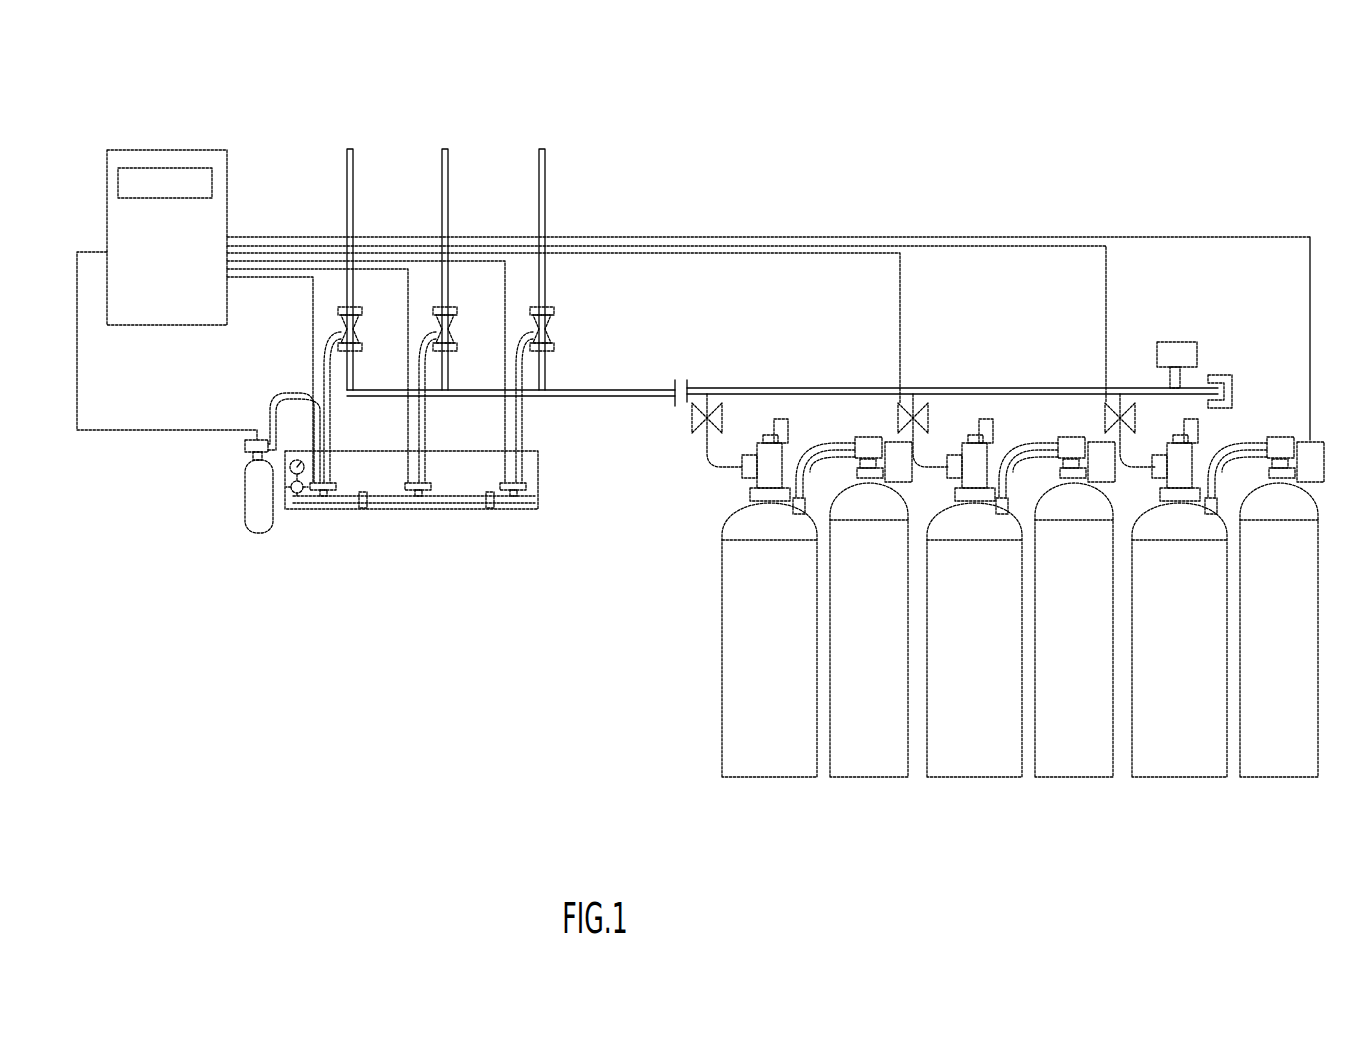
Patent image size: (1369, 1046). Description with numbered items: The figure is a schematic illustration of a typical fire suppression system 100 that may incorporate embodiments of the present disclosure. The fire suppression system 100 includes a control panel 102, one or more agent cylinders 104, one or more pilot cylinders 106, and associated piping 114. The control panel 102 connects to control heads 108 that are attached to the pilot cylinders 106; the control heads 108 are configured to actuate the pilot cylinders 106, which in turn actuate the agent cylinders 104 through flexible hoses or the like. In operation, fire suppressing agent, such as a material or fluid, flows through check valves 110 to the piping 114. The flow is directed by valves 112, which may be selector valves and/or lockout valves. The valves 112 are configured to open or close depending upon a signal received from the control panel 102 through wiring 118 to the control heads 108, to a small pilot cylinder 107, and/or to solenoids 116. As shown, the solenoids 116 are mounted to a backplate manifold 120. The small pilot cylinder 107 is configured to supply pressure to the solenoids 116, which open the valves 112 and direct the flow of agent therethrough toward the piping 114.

The fire suppression system 100 is at (1228, 150).
The control panel 102 is at (124, 228).
The agent cylinder 104 is at (758, 768).
The pilot cylinder 106 is at (872, 772).
The small pilot cylinder 107 is at (258, 522).
The control head 108 is at (258, 449).
The check valve 110 is at (719, 410).
The valve 112 is at (358, 330).
The piping 114 is at (346, 172).
The solenoid 116 is at (318, 503).
The wiring 118 is at (683, 237).
The backplate manifold 120 is at (528, 467).